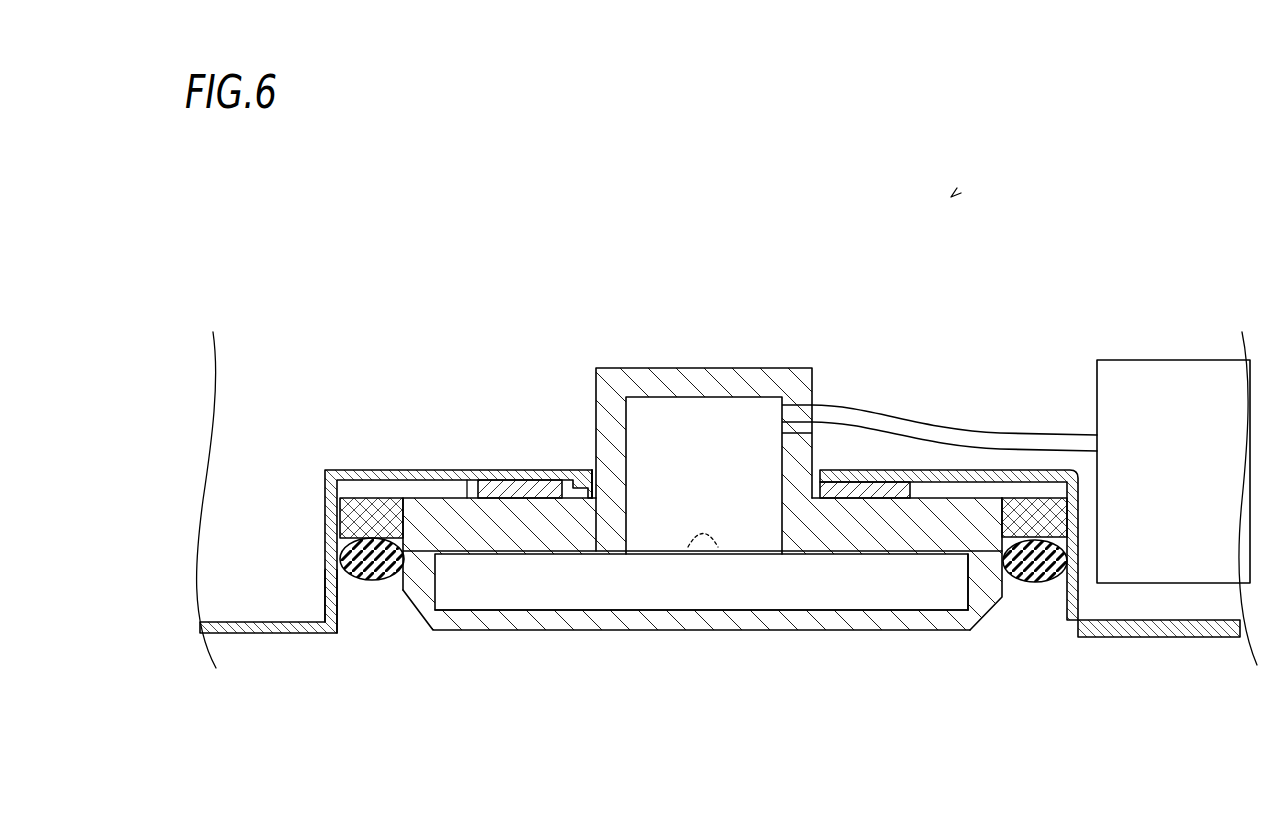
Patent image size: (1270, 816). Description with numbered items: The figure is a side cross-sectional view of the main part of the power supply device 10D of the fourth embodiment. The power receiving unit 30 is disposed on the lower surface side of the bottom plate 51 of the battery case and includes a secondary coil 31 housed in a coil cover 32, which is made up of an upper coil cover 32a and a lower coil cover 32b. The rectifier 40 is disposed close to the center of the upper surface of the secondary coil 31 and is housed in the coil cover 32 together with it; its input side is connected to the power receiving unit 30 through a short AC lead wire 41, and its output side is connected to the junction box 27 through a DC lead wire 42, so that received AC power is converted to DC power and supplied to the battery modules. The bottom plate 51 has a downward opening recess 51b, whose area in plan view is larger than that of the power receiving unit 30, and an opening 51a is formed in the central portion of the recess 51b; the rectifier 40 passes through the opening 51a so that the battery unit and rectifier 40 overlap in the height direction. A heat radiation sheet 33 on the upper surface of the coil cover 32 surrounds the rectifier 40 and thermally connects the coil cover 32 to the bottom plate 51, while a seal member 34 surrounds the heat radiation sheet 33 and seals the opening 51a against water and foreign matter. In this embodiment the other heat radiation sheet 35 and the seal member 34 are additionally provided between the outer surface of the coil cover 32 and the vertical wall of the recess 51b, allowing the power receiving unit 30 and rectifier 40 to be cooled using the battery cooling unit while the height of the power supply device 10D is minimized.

The power supply device 10D is at (951, 197).
The junction box 27 is at (1160, 360).
The power receiving unit 30 is at (722, 558).
The secondary coil 31 is at (826, 585).
The coil cover 32 is at (722, 623).
The upper coil cover 32a is at (978, 540).
The lower coil cover 32b is at (686, 648).
The heat radiation sheet 33 is at (522, 490).
The seal member 34 is at (388, 583).
The other heat radiation sheet 35 is at (377, 510).
The rectifier 40 is at (702, 425).
The AC lead wire 41 is at (690, 547).
The DC lead wire 42 is at (923, 422).
The bottom plate 51 is at (250, 635).
The opening 51a is at (600, 458).
The recess 51b is at (347, 608).